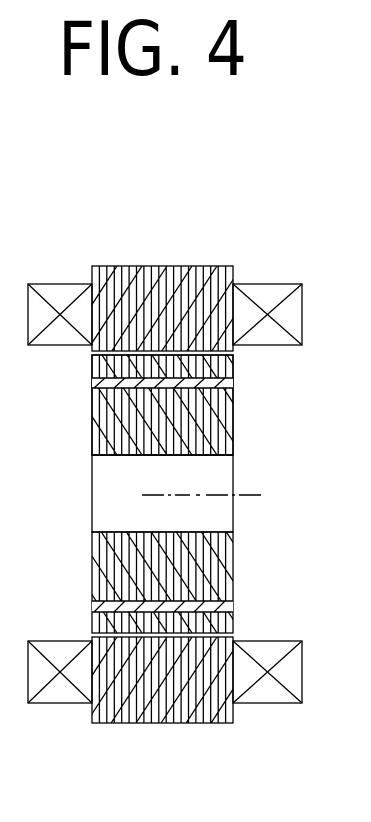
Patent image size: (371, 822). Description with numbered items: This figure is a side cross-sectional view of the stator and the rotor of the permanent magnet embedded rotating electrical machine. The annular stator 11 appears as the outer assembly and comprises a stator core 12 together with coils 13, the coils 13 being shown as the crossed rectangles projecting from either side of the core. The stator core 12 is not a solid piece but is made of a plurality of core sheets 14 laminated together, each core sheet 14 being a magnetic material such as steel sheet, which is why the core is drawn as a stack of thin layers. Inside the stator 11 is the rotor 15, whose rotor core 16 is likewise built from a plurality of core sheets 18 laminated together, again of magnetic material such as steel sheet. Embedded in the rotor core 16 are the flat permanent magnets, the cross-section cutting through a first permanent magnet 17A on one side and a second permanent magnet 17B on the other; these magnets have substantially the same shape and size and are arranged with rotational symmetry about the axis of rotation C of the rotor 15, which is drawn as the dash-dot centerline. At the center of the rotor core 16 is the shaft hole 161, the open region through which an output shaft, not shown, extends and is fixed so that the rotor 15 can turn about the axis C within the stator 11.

The stator 11 is at (180, 215).
The stator core 12 is at (151, 470).
The coils 13 is at (67, 292).
The core sheets 14 is at (115, 267).
The rotor 15 is at (332, 367).
The rotor core 16 is at (209, 405).
The first flat permanent magnets 17A is at (233, 605).
The second flat permanent magnets 17B is at (233, 385).
The core sheets 18 is at (215, 425).
The shaft hole 161 is at (98, 471).
The axis of rotation C is at (168, 495).